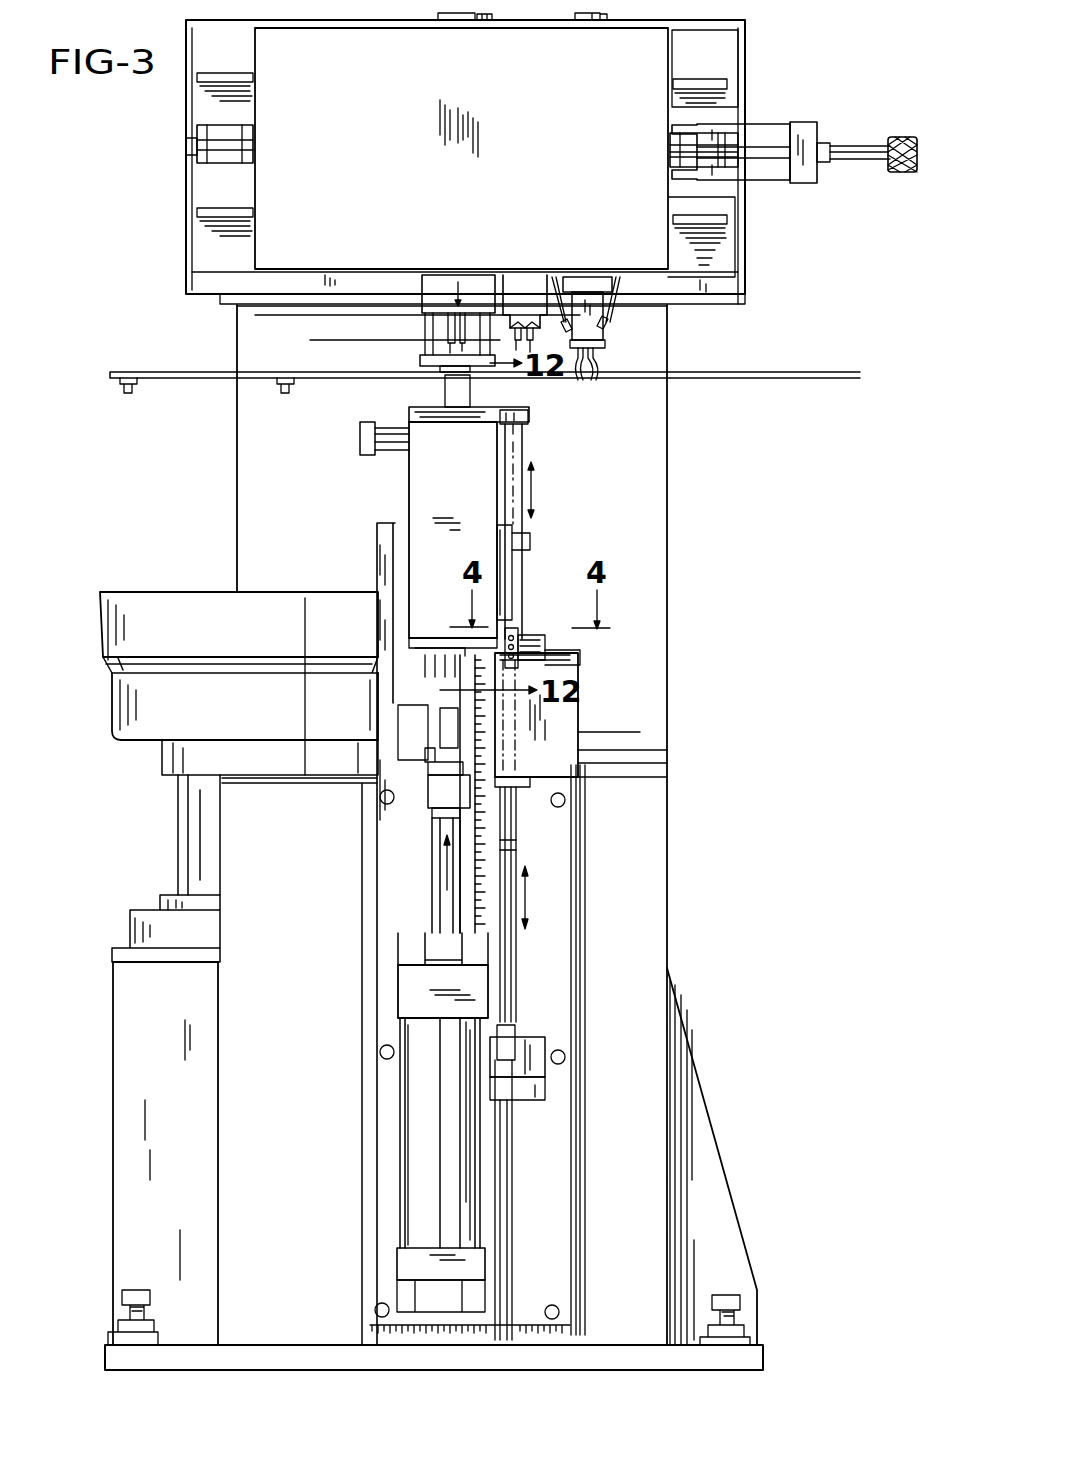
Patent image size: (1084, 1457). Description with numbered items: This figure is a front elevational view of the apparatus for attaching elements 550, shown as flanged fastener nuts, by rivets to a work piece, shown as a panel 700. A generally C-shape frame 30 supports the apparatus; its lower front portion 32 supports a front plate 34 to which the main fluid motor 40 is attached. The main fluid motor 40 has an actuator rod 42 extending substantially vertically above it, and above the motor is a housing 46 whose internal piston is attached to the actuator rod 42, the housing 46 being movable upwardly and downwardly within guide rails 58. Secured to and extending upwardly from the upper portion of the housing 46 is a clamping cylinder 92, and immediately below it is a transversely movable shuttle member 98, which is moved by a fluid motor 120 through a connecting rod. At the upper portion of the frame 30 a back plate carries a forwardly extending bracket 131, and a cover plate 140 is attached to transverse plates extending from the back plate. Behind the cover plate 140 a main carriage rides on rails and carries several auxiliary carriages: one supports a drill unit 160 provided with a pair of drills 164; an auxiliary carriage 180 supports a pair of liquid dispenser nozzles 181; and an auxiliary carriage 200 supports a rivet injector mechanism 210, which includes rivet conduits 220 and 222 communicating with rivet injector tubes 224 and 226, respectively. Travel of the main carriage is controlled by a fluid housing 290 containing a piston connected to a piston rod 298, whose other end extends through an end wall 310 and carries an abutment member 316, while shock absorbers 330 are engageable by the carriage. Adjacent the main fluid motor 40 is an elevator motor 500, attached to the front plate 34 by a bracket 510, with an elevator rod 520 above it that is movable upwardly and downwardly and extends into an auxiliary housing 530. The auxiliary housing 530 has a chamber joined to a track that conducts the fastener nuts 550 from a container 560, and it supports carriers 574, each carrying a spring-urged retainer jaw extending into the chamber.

The C-shape frame 30 is at (237, 466).
The lower front portion 32 is at (648, 932).
The front plate 34 is at (560, 1192).
The main fluid motor 40 is at (432, 1149).
The actuator rod 42 is at (432, 876).
The housing 46 is at (463, 499).
The guide rails 58 is at (384, 545).
The clamping cylinder 92 is at (443, 396).
The shuttle member 98 is at (528, 426).
The fluid motor 120 is at (370, 441).
The bracket 131 is at (420, 360).
The cover plate 140 is at (382, 116).
The drill unit 160 is at (436, 280).
The drills 164 is at (450, 340).
The auxiliary carriage 180 is at (522, 278).
The liquid dispenser nozzles 181 is at (525, 322).
The auxiliary carriage 200 is at (586, 278).
The rivet injector mechanism 210 is at (590, 330).
The rivet conduit 220 is at (556, 272).
The rivet conduit 222 is at (612, 314).
The rivet injector tube 224 is at (580, 380).
The rivet injector tube 226 is at (592, 378).
The fluid housing 290 is at (762, 130).
The piston rod 298 is at (853, 145).
The end wall 310 is at (812, 180).
The abutment member 316 is at (897, 174).
The shock absorbers 330 is at (211, 130).
The elevator motor 500 is at (508, 1170).
The bracket 510 is at (534, 1036).
The elevator rod 520 is at (530, 450).
The auxiliary housing 530 is at (572, 720).
The elements 550 is at (285, 391).
The container 560 is at (202, 592).
The carrier 574 is at (532, 630).
The panel 700 is at (178, 370).